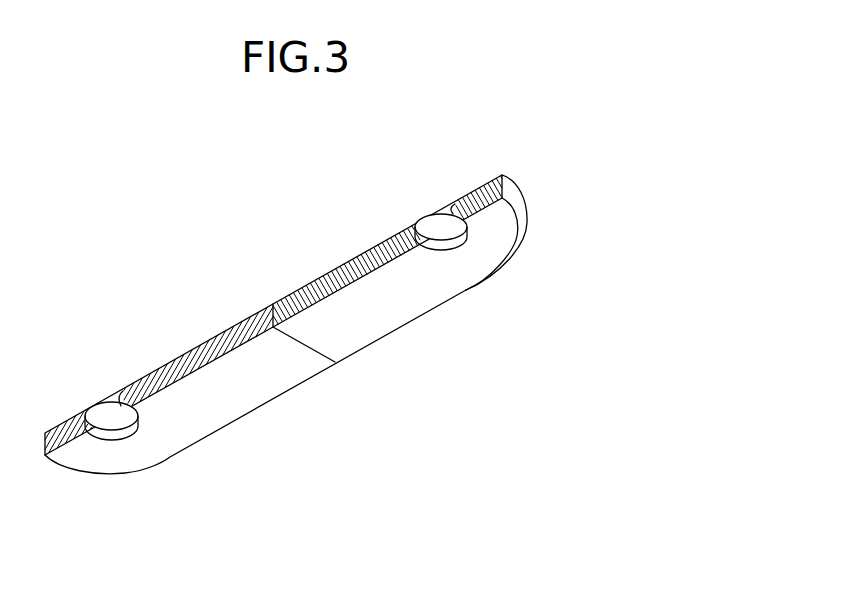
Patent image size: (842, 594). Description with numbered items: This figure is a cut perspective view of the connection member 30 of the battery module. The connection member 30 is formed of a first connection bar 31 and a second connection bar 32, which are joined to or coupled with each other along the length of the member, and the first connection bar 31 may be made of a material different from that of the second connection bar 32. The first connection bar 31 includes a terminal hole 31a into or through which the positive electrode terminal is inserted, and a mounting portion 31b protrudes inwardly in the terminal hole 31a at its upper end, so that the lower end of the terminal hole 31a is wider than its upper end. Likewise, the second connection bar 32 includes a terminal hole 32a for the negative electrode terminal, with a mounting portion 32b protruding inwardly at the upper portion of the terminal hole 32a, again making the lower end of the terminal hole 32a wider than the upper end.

The connection member 30 is at (291, 250).
The first connection bar 31 is at (193, 350).
The terminal hole 31a is at (117, 438).
The mounting portion 31b is at (120, 415).
The second connection bar 32 is at (365, 252).
The terminal hole 32a is at (448, 246).
The mounting portion 32b is at (447, 221).